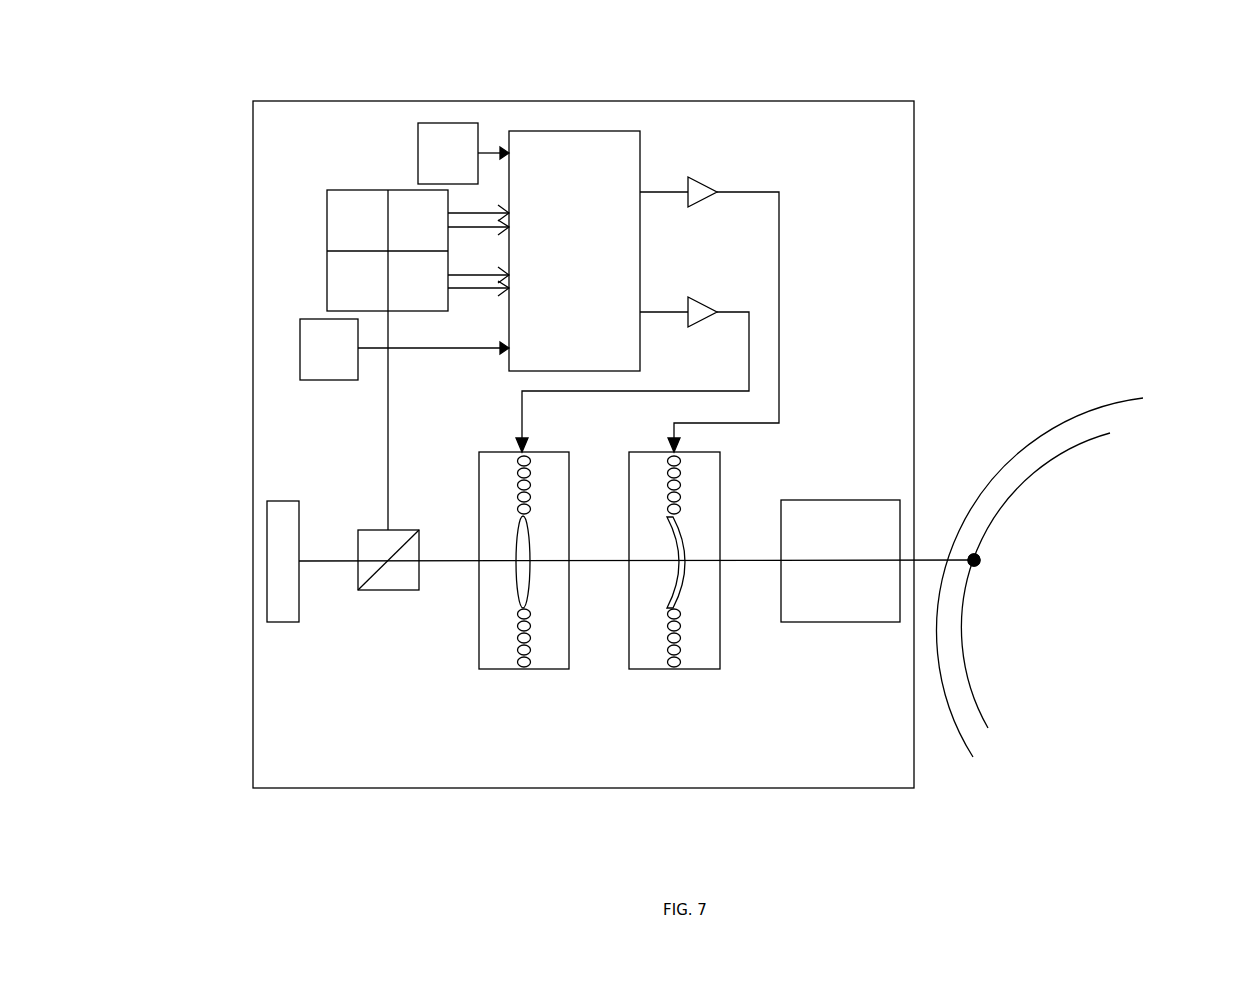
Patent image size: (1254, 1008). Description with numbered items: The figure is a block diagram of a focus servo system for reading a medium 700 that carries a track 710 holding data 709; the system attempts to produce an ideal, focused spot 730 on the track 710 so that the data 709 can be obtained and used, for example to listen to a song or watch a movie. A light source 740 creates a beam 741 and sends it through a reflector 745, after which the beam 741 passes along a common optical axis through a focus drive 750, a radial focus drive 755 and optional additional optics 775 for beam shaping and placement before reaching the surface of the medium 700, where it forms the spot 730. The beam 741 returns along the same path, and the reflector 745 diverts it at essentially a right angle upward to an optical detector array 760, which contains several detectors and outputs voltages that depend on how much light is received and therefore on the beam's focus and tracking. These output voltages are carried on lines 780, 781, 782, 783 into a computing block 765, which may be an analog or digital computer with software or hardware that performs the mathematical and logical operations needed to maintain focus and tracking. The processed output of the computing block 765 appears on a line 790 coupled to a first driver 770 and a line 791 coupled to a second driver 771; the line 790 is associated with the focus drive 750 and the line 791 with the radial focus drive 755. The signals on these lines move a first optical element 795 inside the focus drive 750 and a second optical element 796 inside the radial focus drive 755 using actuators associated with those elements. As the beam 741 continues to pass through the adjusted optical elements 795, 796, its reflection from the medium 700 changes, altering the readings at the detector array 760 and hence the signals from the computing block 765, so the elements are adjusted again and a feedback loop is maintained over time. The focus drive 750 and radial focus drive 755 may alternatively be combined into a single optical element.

The medium 700 is at (1082, 428).
The data 709 is at (977, 572).
The track 710 is at (1110, 432).
The focused spot 730 is at (976, 565).
The light source 740 is at (283, 539).
The beam 741 is at (933, 558).
The reflector 745 is at (387, 590).
The focus drive 750 is at (541, 610).
The radial focus drive 755 is at (693, 610).
The optical detector array 760 is at (360, 190).
The computing block 765 is at (575, 131).
The first driver 770 is at (702, 177).
The second driver 771 is at (702, 297).
The additional optics 775 is at (838, 622).
The line 780 is at (488, 148).
The line 781 is at (474, 212).
The line 782 is at (474, 274).
The line 783 is at (445, 347).
The line 790 is at (779, 240).
The line 791 is at (573, 390).
The first optical element 795 is at (532, 543).
The second optical element 796 is at (685, 543).